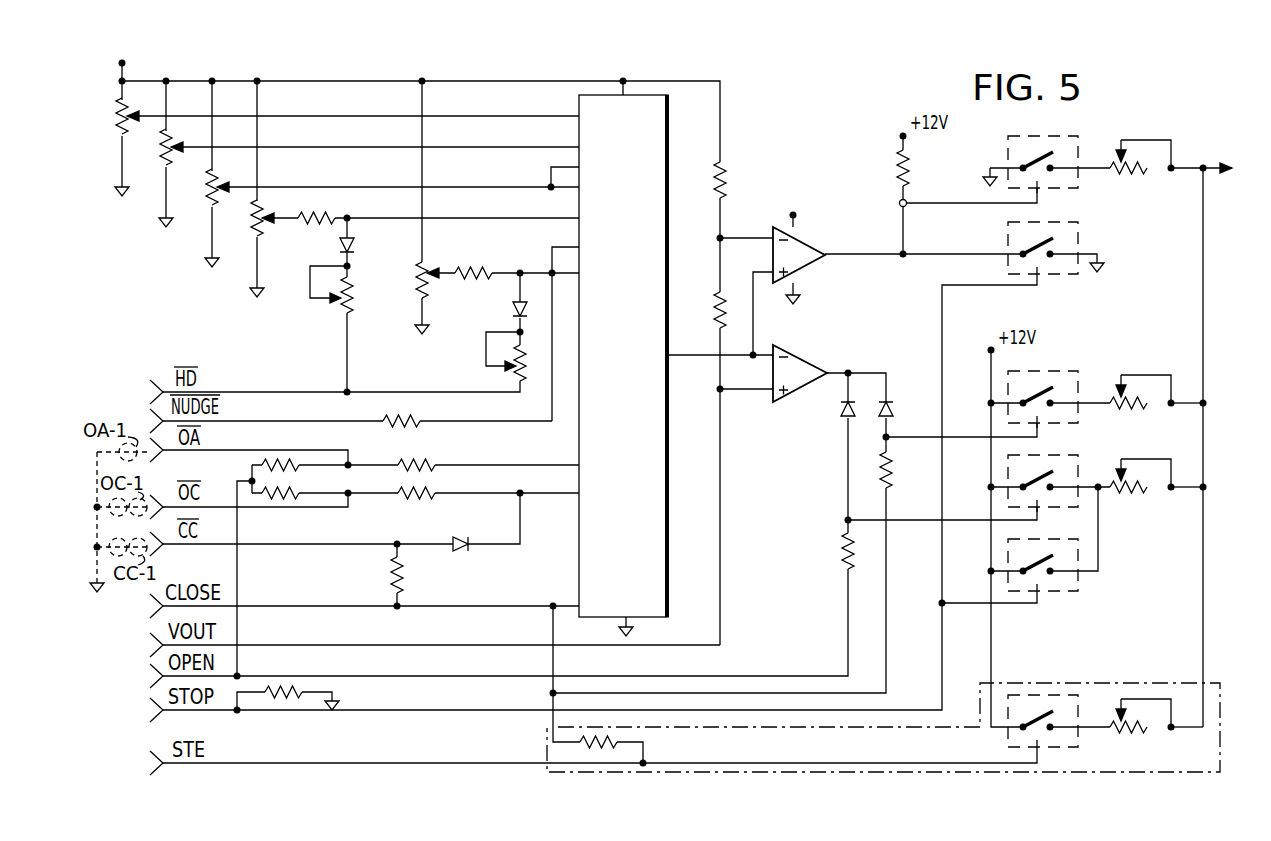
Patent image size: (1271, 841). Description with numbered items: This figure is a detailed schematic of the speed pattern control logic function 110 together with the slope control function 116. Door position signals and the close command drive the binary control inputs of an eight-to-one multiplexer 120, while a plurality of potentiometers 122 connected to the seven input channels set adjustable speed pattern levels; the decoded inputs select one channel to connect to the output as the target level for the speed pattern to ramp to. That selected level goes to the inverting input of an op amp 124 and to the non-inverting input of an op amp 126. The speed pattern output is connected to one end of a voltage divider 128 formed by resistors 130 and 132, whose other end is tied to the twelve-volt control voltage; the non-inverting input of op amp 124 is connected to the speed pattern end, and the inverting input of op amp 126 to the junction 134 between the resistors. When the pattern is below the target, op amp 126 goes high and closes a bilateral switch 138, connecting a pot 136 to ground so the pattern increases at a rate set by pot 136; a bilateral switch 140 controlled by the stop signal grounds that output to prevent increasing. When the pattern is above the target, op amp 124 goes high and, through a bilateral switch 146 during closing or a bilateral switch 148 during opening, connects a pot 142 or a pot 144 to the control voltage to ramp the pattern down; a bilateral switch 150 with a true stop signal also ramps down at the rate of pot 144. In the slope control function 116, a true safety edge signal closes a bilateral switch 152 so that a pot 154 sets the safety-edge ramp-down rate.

The speed pattern control logic function 110 is at (778, 112).
The slope control function 116 is at (544, 743).
The 8 to 1 multiplexer 120 is at (670, 570).
The potentiometers 122 is at (128, 128).
The op amp 124 is at (788, 346).
The op amp 126 is at (815, 265).
The voltage divider 128 is at (723, 282).
The resistor 130 is at (716, 312).
The resistor 132 is at (712, 172).
The junction 134 is at (728, 232).
The pot 136 is at (1137, 140).
The bilateral switch 138 is at (1040, 136).
The bilateral switch 140 is at (1072, 222).
The pot 142 is at (1140, 395).
The pot 144 is at (1145, 478).
The bilateral switch 146 is at (1045, 371).
The bilateral switch 148 is at (1070, 455).
The bilateral switch 150 is at (1078, 593).
The bilateral switch 152 is at (1075, 750).
The pot 154 is at (1133, 735).